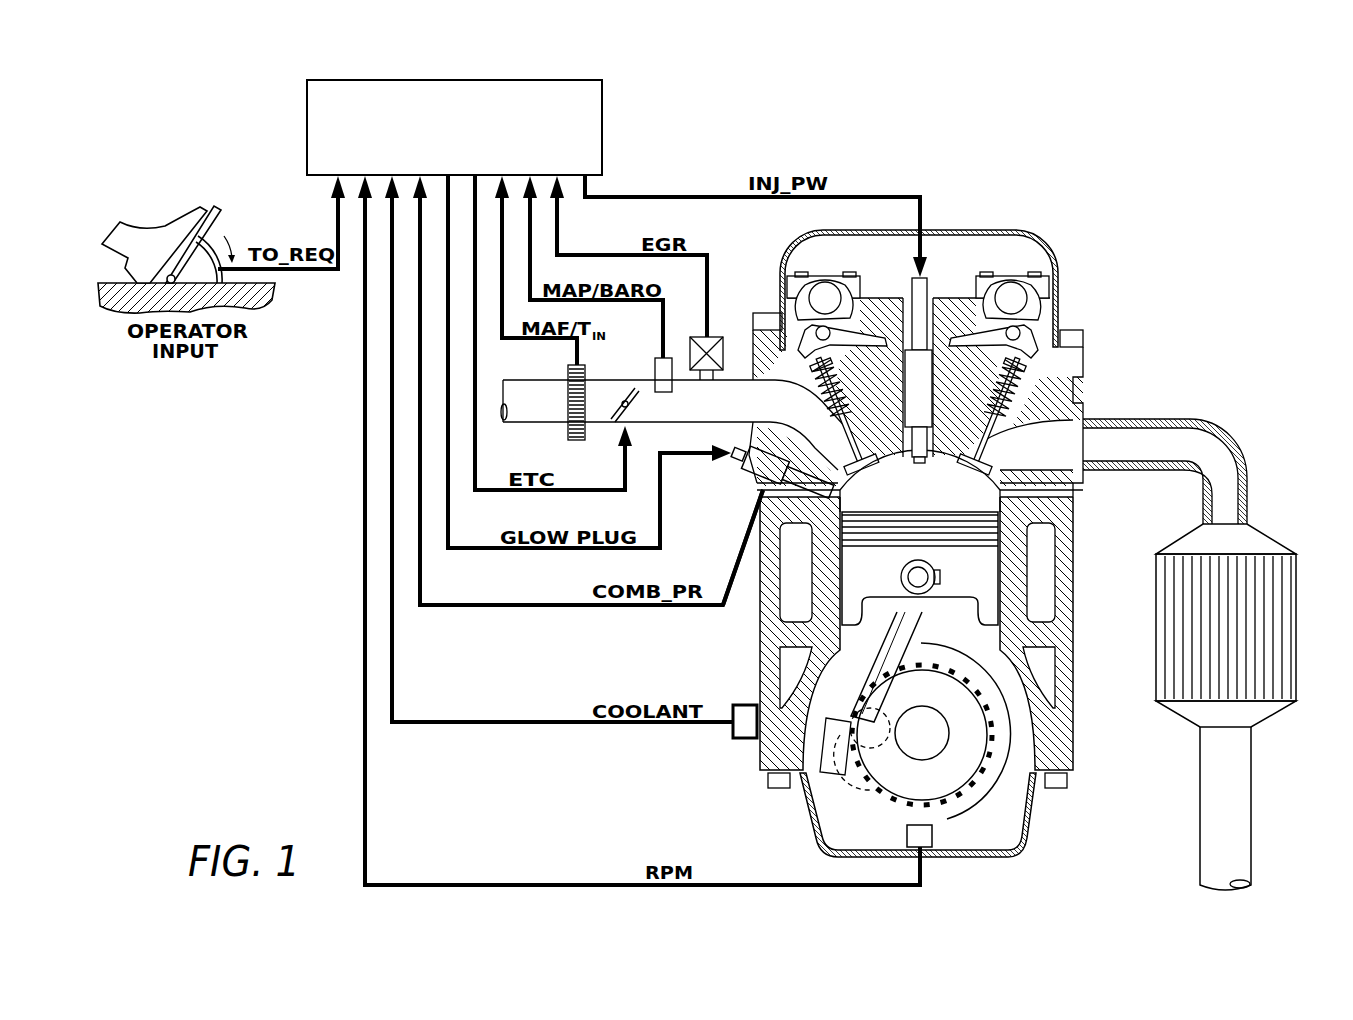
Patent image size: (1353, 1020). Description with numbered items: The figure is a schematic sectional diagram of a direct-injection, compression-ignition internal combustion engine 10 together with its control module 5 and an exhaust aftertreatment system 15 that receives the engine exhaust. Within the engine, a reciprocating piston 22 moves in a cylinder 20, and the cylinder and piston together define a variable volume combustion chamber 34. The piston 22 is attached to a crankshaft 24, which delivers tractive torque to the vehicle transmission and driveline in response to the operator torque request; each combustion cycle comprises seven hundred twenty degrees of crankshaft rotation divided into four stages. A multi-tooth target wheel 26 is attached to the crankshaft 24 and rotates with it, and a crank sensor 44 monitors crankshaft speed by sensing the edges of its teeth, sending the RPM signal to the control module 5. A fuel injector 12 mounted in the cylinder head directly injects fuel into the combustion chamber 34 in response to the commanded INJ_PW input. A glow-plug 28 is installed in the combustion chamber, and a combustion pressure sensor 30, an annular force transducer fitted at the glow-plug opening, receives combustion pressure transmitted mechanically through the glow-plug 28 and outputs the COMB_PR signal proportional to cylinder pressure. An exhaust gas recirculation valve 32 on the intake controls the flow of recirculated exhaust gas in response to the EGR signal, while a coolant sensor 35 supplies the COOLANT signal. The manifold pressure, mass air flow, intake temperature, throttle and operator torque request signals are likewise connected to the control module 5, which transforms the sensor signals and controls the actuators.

The control module 5 is at (578, 88).
The internal combustion engine 10 is at (1043, 247).
The fuel injector 12 is at (922, 290).
The exhaust aftertreatment system 15 is at (1232, 520).
The cylinder 20 is at (1078, 490).
The piston 22 is at (886, 585).
The crankshaft 24 is at (1000, 737).
The multi-tooth target wheel 26 is at (963, 750).
The glow-plug 28 is at (683, 455).
The combustion pressure sensor 30 is at (690, 607).
The exhaust gas recirculation valve 32 is at (713, 335).
The combustion chamber 34 is at (928, 502).
The coolant sensor 35 is at (690, 723).
The crank sensor 44 is at (925, 838).